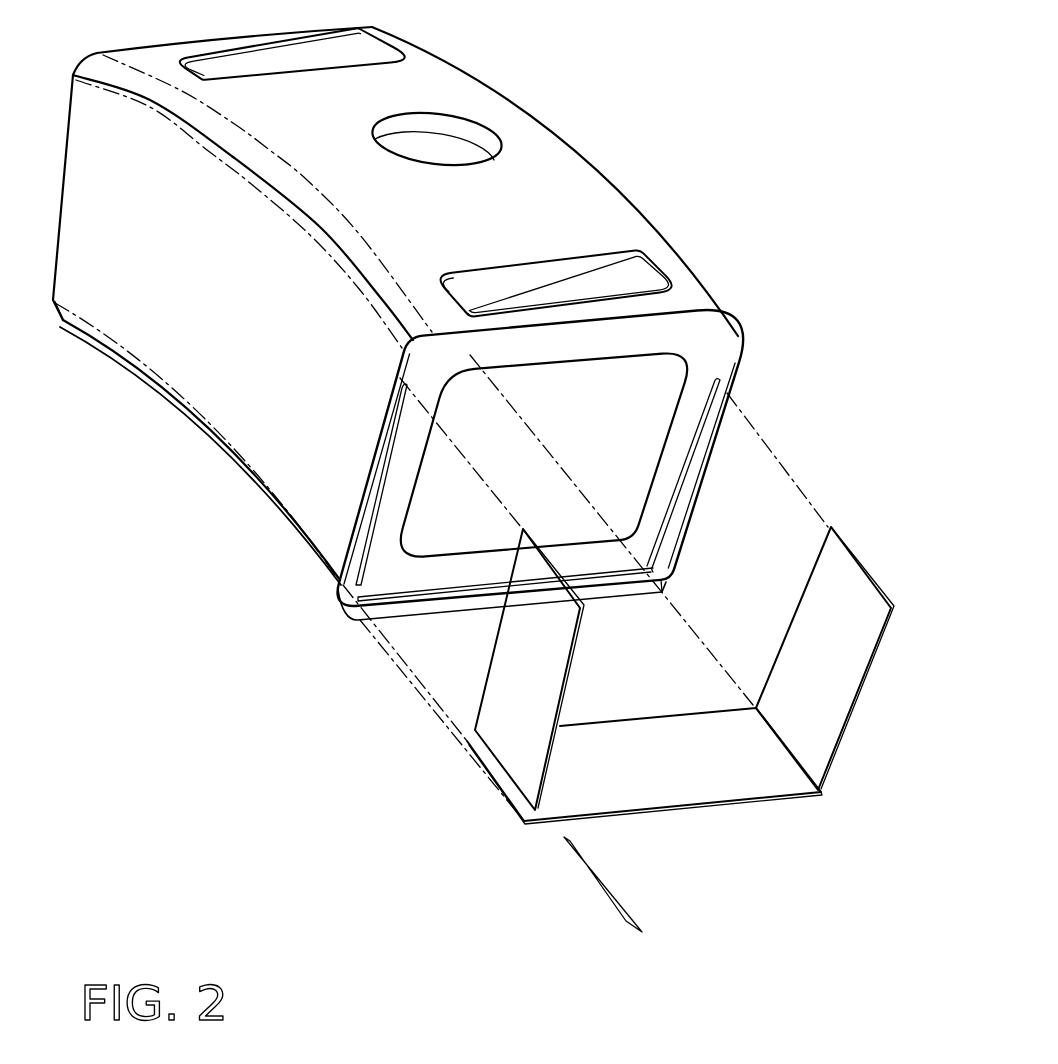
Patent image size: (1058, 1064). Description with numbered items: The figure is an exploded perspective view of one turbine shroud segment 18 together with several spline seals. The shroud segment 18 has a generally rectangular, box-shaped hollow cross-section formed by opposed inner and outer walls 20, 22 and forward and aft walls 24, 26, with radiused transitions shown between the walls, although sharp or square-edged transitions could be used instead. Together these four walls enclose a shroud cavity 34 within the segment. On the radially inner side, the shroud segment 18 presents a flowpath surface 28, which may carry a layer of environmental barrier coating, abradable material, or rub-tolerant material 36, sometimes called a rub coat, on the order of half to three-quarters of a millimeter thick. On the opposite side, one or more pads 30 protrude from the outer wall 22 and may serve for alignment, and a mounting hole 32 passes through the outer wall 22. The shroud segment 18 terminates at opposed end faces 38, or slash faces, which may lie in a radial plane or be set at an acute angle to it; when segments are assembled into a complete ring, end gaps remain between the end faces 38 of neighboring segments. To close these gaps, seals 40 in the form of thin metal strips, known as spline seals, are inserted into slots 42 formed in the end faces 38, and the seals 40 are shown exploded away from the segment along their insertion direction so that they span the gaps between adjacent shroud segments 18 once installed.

The shroud segment 18 is at (688, 118).
The inner wall 20 is at (210, 428).
The outer wall 22 is at (455, 80).
The forward wall 24 is at (282, 354).
The aft wall 26 is at (623, 486).
The flowpath surface 28 is at (594, 599).
The pad 30 is at (640, 273).
The mounting hole 32 is at (470, 134).
The shroud cavity 34 is at (478, 502).
The abradable material 36 is at (660, 586).
The end face 38 is at (680, 497).
The seal 40 is at (757, 727).
The slot 42 is at (601, 566).